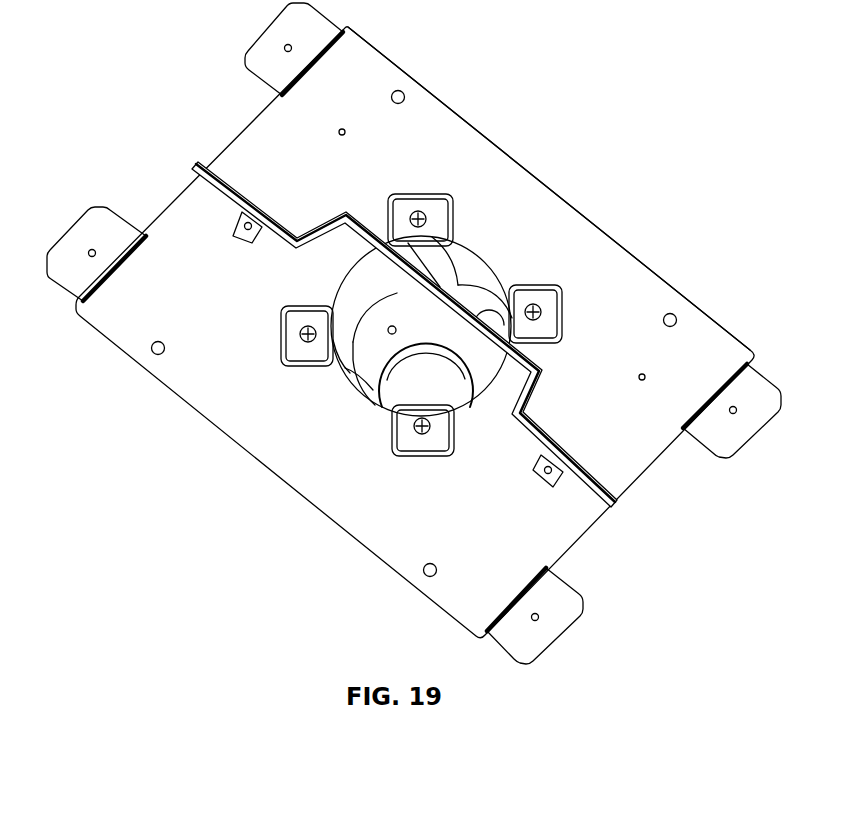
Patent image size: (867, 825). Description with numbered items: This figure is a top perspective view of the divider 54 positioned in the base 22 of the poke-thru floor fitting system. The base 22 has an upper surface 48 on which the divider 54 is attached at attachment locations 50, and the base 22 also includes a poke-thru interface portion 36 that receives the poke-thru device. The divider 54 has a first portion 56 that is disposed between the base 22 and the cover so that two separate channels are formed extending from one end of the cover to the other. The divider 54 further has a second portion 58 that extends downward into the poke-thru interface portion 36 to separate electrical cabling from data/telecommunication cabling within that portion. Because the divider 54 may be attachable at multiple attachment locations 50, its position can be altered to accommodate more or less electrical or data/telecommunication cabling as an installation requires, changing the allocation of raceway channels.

The base 22 is at (657, 463).
The upper surface 48 is at (508, 172).
The attachment locations 50 is at (338, 134).
The divider 54 is at (534, 289).
The first portion 56 is at (318, 226).
The poke-thru interface portion 36 is at (345, 368).
The second portion 58 is at (482, 344).